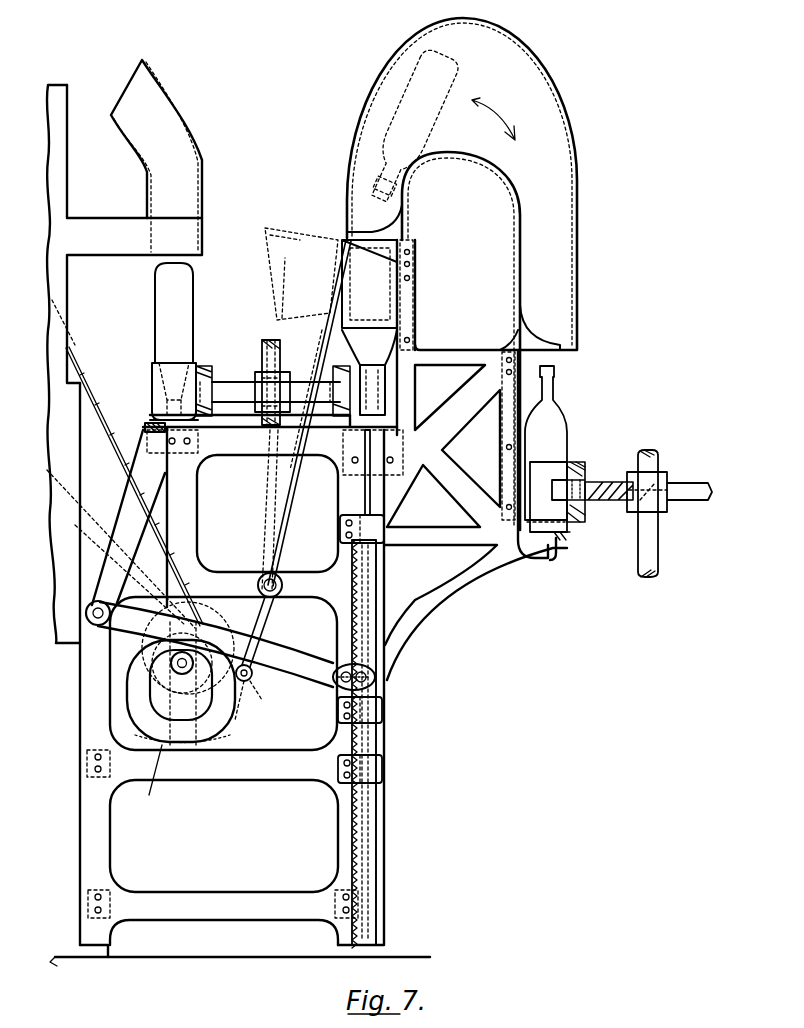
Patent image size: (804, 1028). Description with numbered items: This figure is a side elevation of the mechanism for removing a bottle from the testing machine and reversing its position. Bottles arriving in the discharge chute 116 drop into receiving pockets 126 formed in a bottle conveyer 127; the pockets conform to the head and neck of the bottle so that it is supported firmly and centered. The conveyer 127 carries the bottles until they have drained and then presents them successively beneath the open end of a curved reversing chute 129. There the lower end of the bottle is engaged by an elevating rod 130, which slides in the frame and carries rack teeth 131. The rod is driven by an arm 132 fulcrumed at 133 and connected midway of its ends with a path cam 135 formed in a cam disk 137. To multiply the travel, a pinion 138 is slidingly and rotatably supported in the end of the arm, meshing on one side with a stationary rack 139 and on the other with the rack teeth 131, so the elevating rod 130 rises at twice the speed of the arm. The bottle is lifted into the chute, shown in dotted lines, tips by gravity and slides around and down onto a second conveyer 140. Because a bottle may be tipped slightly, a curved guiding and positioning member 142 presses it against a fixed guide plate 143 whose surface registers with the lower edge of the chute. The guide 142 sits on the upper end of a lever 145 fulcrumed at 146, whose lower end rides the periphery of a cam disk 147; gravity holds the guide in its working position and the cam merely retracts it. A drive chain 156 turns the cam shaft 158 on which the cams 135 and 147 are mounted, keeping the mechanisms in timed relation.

The discharge chute 116 is at (188, 140).
The receiving pockets 126 is at (157, 380).
The bottle conveyer 127 is at (200, 372).
The curved reversing chute 129 is at (578, 137).
The elevating rod 130 is at (386, 505).
The rack teeth 131 is at (374, 800).
The arm 132 is at (304, 668).
The fulcrum 133 is at (92, 627).
The path cam 135 is at (215, 712).
The cam disk 137 is at (149, 778).
The pinion 138 is at (345, 690).
The stationary rack 139 is at (350, 618).
The second conveyer 140 is at (580, 462).
The curved guiding and positioning member 142 is at (346, 252).
The fixed guide plate 143 is at (412, 330).
The lever 145 is at (290, 522).
The fulcrum 146 is at (262, 575).
The cam disk 147 is at (200, 627).
The drive chain 156 is at (102, 413).
The cam shaft 158 is at (184, 674).